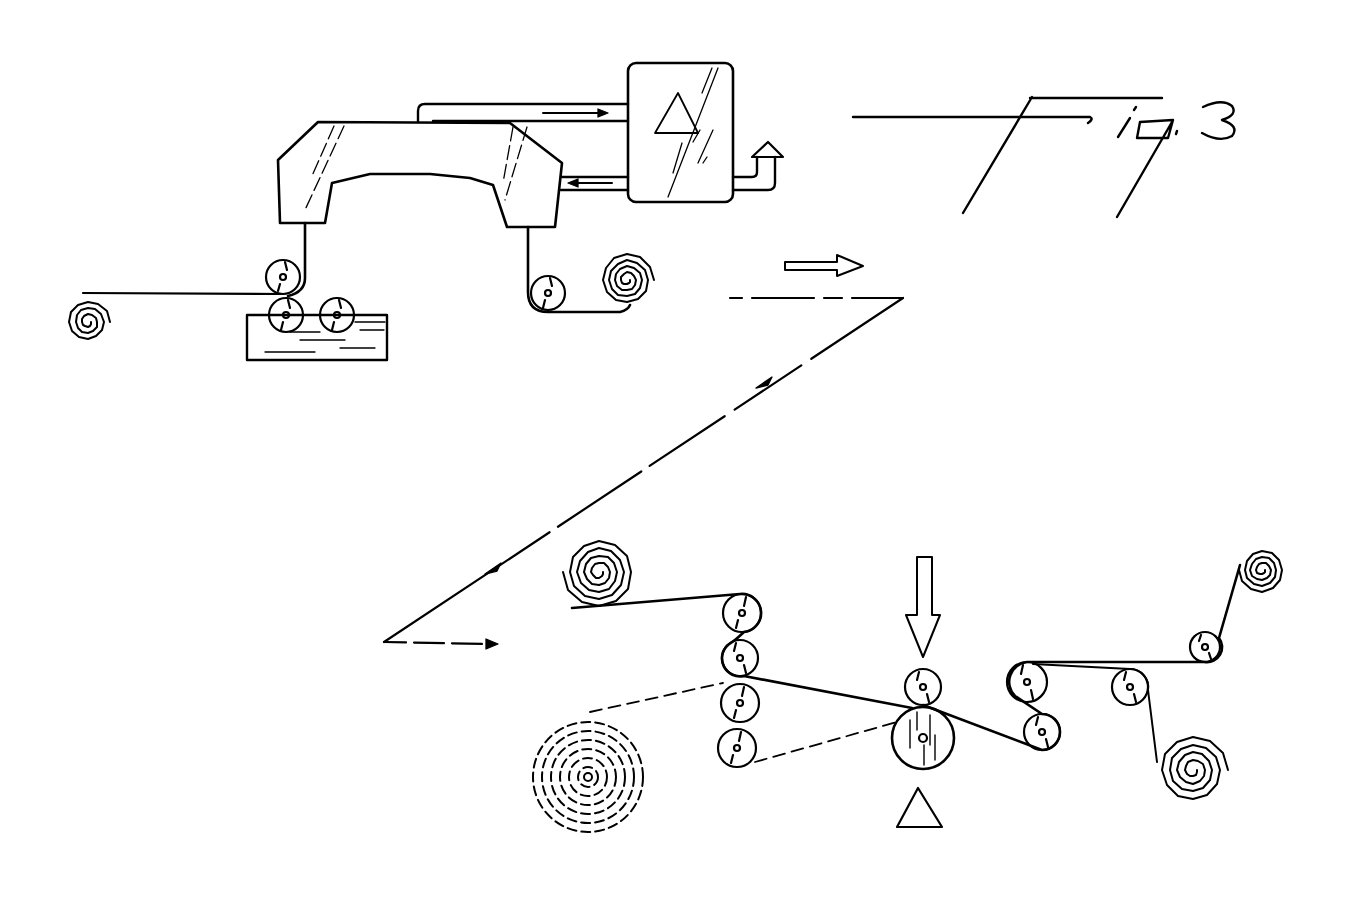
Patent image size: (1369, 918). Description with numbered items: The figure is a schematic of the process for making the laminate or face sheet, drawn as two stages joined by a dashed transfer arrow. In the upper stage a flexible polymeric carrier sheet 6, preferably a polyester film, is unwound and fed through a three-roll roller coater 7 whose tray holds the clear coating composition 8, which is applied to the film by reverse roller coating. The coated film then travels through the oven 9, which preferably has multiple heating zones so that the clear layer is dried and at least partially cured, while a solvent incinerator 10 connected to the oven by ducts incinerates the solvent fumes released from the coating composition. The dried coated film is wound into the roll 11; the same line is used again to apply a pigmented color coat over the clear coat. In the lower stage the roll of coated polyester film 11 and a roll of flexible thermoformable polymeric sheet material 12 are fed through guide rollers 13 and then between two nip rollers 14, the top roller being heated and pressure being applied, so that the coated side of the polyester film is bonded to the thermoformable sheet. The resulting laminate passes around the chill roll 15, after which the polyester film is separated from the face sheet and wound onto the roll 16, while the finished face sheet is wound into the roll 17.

The flexible polymeric carrier sheet 6 is at (83, 293).
The roller coater 7 is at (363, 305).
The clear coating composition 8 is at (377, 343).
The oven 9 is at (420, 178).
The solvent incinerator 10 is at (741, 52).
The roll of coated polyester film 11 is at (658, 294).
The thermoformable polymeric sheet material 12 is at (537, 772).
The guide rollers 13 is at (724, 627).
The nip rollers 14 is at (897, 727).
The chill roll 15 is at (1063, 727).
The roll of separated polyester film 16 is at (1283, 557).
The roll of face sheet 17 is at (1233, 777).